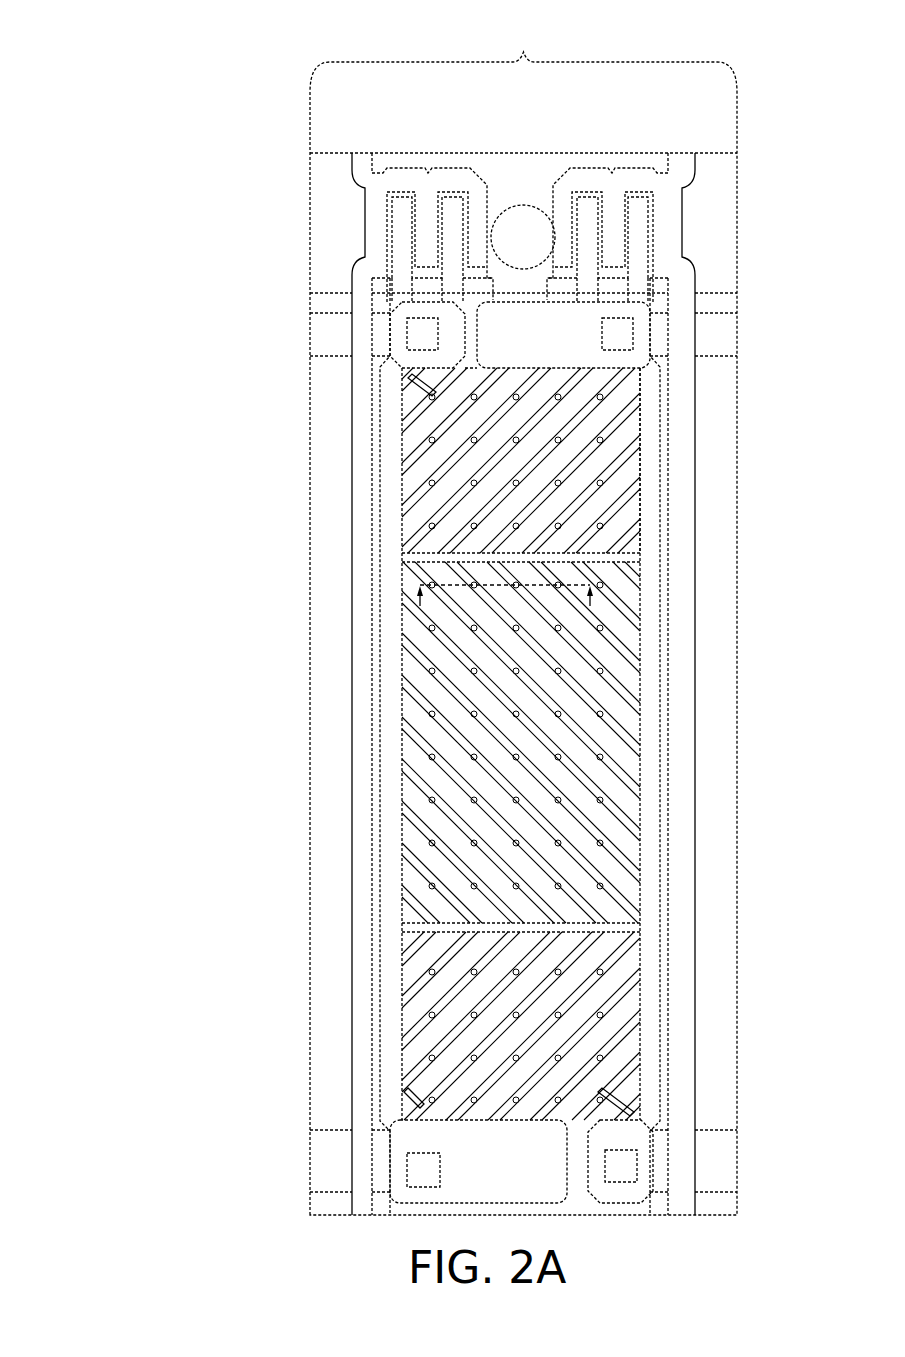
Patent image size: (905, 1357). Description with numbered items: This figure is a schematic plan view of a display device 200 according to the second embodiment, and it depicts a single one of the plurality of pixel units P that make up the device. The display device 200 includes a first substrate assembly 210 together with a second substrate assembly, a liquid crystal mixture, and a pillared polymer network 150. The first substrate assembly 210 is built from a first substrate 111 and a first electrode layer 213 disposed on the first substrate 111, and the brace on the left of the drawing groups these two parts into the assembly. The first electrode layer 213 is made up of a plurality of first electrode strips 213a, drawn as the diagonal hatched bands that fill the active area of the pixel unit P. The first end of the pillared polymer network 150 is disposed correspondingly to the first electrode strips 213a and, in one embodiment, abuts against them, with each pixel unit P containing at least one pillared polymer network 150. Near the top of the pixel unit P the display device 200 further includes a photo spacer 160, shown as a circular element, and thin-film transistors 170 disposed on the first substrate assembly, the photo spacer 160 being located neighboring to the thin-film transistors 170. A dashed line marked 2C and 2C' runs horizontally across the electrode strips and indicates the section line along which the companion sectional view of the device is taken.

The display device 200 is at (823, 29).
The pixel unit P is at (521, 33).
The first substrate 111 is at (333, 375).
The photo spacer 160 is at (523, 222).
The thin-film transistors 170 is at (641, 185).
The first substrate assembly 210 is at (90, 322).
The first electrode layer 213 is at (170, 380).
The first electrode strips 213a is at (408, 420).
The pillared polymer network 150 is at (623, 423).
The section line 2C-2C' 2C is at (420, 603).
The section line 2C- 2C' is at (697, 607).